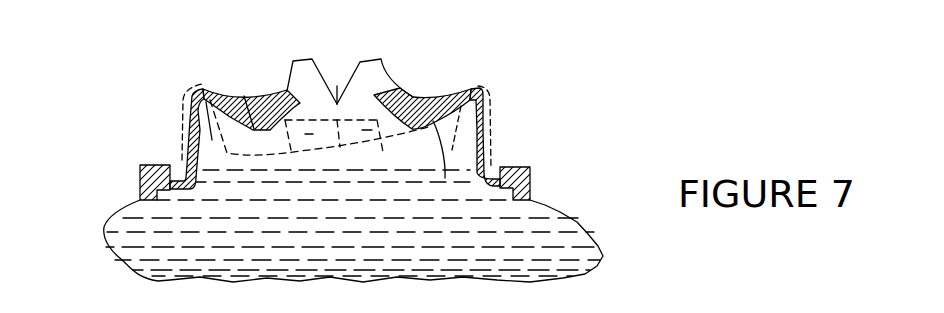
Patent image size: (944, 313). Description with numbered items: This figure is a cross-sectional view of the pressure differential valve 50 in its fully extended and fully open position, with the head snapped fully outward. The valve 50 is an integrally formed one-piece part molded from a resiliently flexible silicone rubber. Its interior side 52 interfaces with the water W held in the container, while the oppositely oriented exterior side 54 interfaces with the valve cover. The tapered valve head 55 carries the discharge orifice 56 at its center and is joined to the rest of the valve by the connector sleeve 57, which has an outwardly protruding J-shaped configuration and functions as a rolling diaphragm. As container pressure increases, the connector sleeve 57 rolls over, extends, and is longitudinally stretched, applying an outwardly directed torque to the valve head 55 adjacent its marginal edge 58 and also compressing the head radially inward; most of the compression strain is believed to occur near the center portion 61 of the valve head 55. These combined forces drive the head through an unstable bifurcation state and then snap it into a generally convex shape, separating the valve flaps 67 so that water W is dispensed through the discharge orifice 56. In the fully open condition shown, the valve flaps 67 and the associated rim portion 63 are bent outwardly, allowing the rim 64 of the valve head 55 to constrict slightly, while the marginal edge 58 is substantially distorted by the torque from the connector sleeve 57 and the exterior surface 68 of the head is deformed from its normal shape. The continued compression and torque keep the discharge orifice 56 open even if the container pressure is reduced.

The pressure differential valve 50 is at (552, 148).
The interior side 52 is at (142, 183).
The exterior side 54 is at (437, 96).
The valve head 55 is at (410, 128).
The discharge orifice 56 is at (321, 127).
The connector sleeve 57 is at (491, 93).
The marginal edge 58 is at (435, 165).
The center portion 61 is at (270, 128).
The rim portion 63 is at (247, 97).
The rim 64 is at (229, 92).
The valve flaps 67 is at (387, 73).
The exterior surface 68 is at (309, 58).
The water W is at (201, 253).